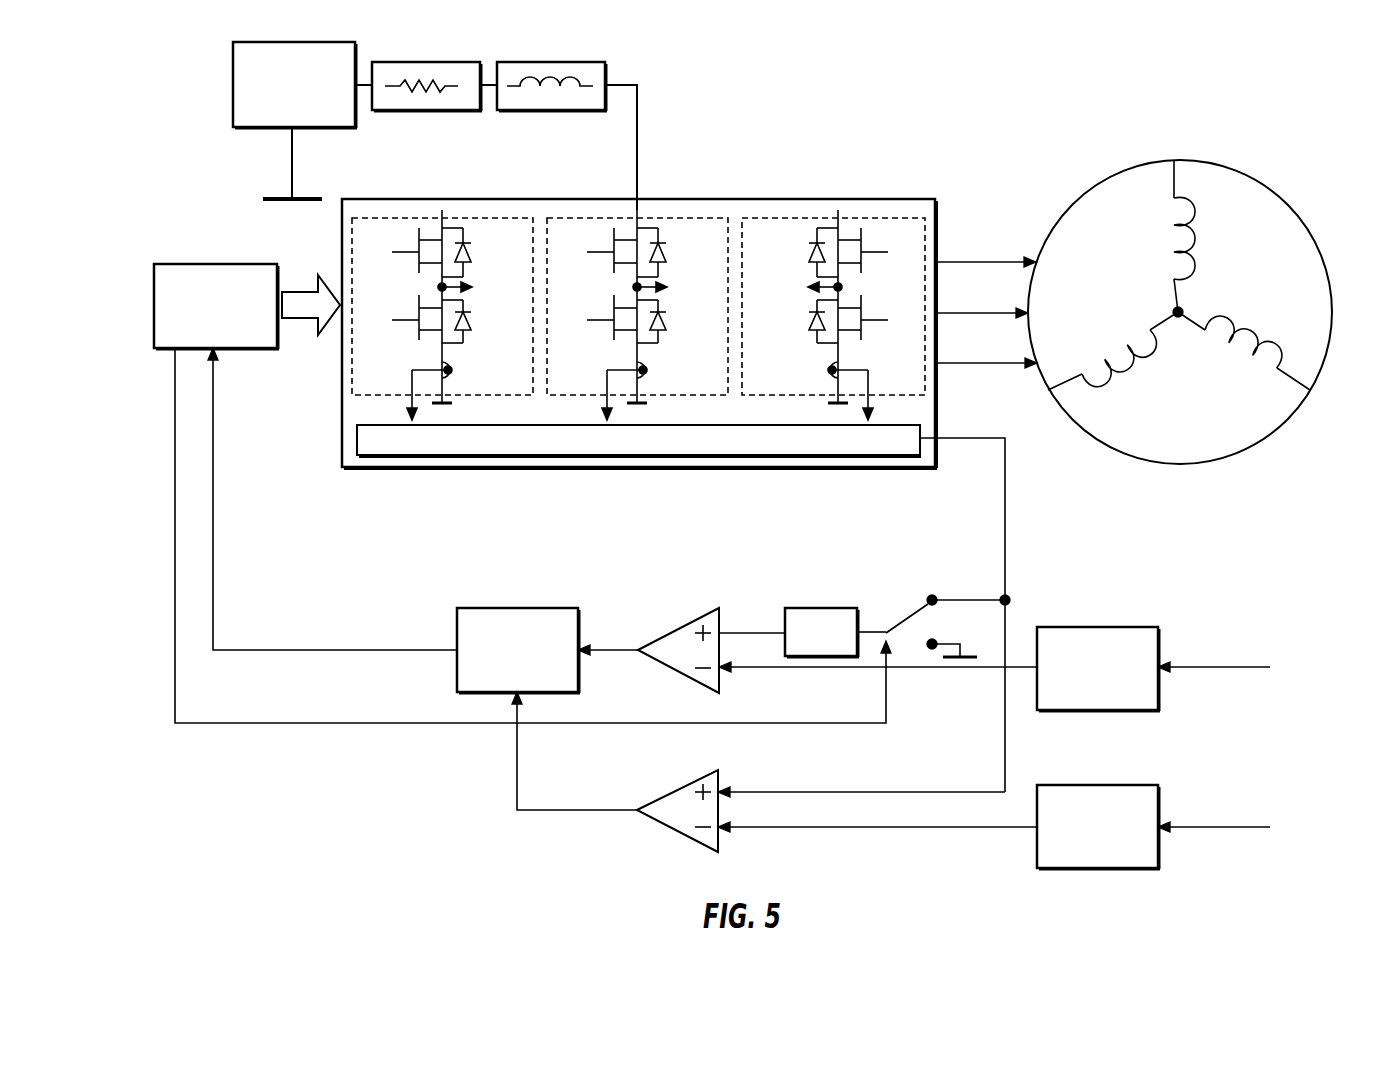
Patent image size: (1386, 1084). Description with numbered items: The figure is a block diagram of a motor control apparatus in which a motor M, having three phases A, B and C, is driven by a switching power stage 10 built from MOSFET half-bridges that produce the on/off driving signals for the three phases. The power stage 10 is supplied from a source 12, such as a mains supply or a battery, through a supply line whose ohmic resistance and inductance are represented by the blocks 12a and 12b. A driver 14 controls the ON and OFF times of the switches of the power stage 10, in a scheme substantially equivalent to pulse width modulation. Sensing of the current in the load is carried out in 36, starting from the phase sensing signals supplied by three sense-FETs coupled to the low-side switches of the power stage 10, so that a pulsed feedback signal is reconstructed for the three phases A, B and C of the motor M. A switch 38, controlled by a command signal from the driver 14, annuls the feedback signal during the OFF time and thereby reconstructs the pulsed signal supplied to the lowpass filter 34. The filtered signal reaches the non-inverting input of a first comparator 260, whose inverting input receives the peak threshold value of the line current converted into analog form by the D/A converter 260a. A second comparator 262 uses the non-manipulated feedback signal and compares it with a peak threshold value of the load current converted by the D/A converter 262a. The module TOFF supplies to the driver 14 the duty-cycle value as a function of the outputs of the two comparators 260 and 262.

The power stage 10 is at (689, 329).
The source 12 is at (233, 53).
The ohmic resistance block 12a is at (437, 110).
The inductance block 12b is at (557, 110).
The driver 14 is at (203, 264).
The lowpass filter 34 is at (830, 608).
The current sensing block 36 is at (438, 455).
The switch 38 is at (898, 600).
The first comparator 260 is at (676, 628).
The D/A converter 260a is at (1098, 627).
The second comparator 262 is at (683, 790).
The D/A converter 262a is at (1148, 785).
The motor M is at (1197, 312).
The phase A is at (1122, 330).
The phase B is at (1232, 367).
The phase C is at (1190, 215).
The controller module TOFF is at (527, 616).